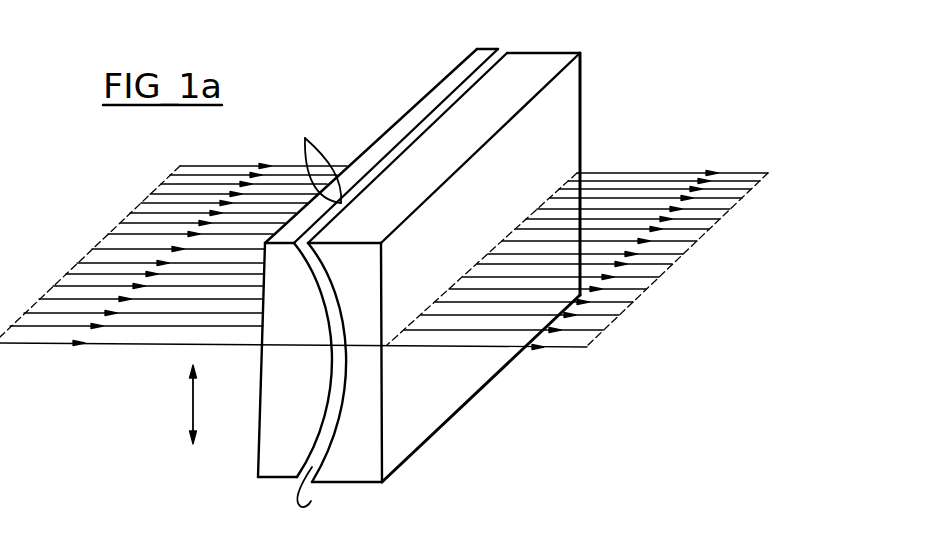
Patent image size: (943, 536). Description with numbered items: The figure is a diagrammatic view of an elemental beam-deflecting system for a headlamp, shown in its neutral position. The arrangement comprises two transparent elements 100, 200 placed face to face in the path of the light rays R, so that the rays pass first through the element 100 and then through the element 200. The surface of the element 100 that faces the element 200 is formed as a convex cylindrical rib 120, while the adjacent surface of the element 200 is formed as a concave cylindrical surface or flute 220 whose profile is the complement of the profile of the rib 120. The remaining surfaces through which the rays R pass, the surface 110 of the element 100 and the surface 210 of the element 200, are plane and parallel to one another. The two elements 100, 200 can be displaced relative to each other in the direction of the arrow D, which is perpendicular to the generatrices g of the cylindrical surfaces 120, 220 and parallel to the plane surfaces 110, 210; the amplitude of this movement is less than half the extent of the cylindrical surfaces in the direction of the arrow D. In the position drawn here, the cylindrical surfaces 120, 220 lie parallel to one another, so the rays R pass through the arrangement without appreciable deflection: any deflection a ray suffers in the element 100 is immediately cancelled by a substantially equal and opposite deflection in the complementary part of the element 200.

The transparent element 100 is at (388, 141).
The plane surface 110 is at (256, 436).
The convex cylindrical rib 120 is at (320, 414).
The transparent element 200 is at (541, 62).
The plane surface 210 is at (387, 292).
The concave cylindrical surface 220 is at (340, 300).
The generatrices of the cylindrical surfaces g is at (316, 314).
The light rays R is at (384, 257).
The arrow indicating direction of relative displacement D is at (206, 404).